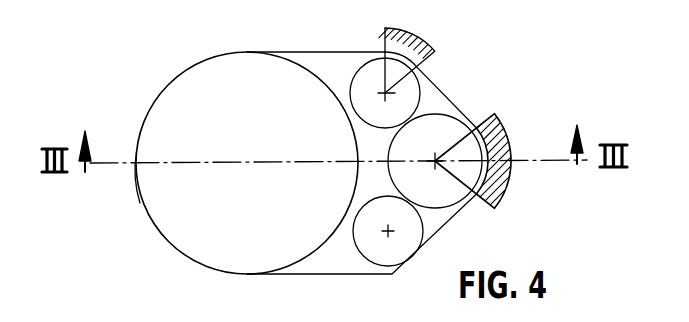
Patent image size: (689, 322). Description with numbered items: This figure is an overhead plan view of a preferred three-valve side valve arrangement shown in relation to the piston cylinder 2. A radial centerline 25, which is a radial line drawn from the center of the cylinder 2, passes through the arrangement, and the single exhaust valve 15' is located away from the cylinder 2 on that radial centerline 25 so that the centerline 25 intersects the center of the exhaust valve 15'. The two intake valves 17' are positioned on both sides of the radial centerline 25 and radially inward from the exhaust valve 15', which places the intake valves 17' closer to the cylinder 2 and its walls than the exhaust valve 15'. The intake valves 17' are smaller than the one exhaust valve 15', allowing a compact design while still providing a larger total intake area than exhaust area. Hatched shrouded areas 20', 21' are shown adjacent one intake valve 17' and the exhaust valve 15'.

The piston cylinder 2 is at (178, 253).
The radial centerline 25 is at (138, 192).
The exhaust valve 15' is at (406, 161).
The intake valves 17' is at (360, 147).
The guide segment 20' is at (376, 51).
The guide segment 21' is at (488, 153).